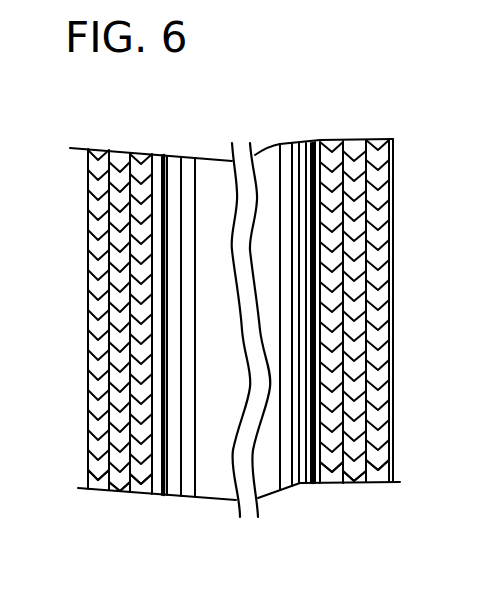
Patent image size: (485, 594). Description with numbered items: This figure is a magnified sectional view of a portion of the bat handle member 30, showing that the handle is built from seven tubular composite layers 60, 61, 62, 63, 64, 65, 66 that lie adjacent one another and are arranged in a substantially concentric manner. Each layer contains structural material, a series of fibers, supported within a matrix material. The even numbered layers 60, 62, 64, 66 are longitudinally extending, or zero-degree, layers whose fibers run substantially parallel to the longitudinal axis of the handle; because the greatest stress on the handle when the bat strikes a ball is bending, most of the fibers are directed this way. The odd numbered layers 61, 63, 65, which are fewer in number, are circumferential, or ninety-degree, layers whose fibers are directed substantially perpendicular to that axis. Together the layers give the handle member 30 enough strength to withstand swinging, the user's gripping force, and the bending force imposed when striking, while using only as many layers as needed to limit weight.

The laminated hose body / wall 30 is at (90, 194).
The longitudinally extending layer 60 is at (92, 150).
The circumferentially disposed layer 61 is at (100, 491).
The longitudinally extending layer 62 is at (113, 152).
The circumferentially disposed layer 63 is at (130, 492).
The longitudinally extending layer 64 is at (136, 150).
The circumferentially disposed layer 65 is at (150, 494).
The longitudinally extending layer 66 is at (158, 154).